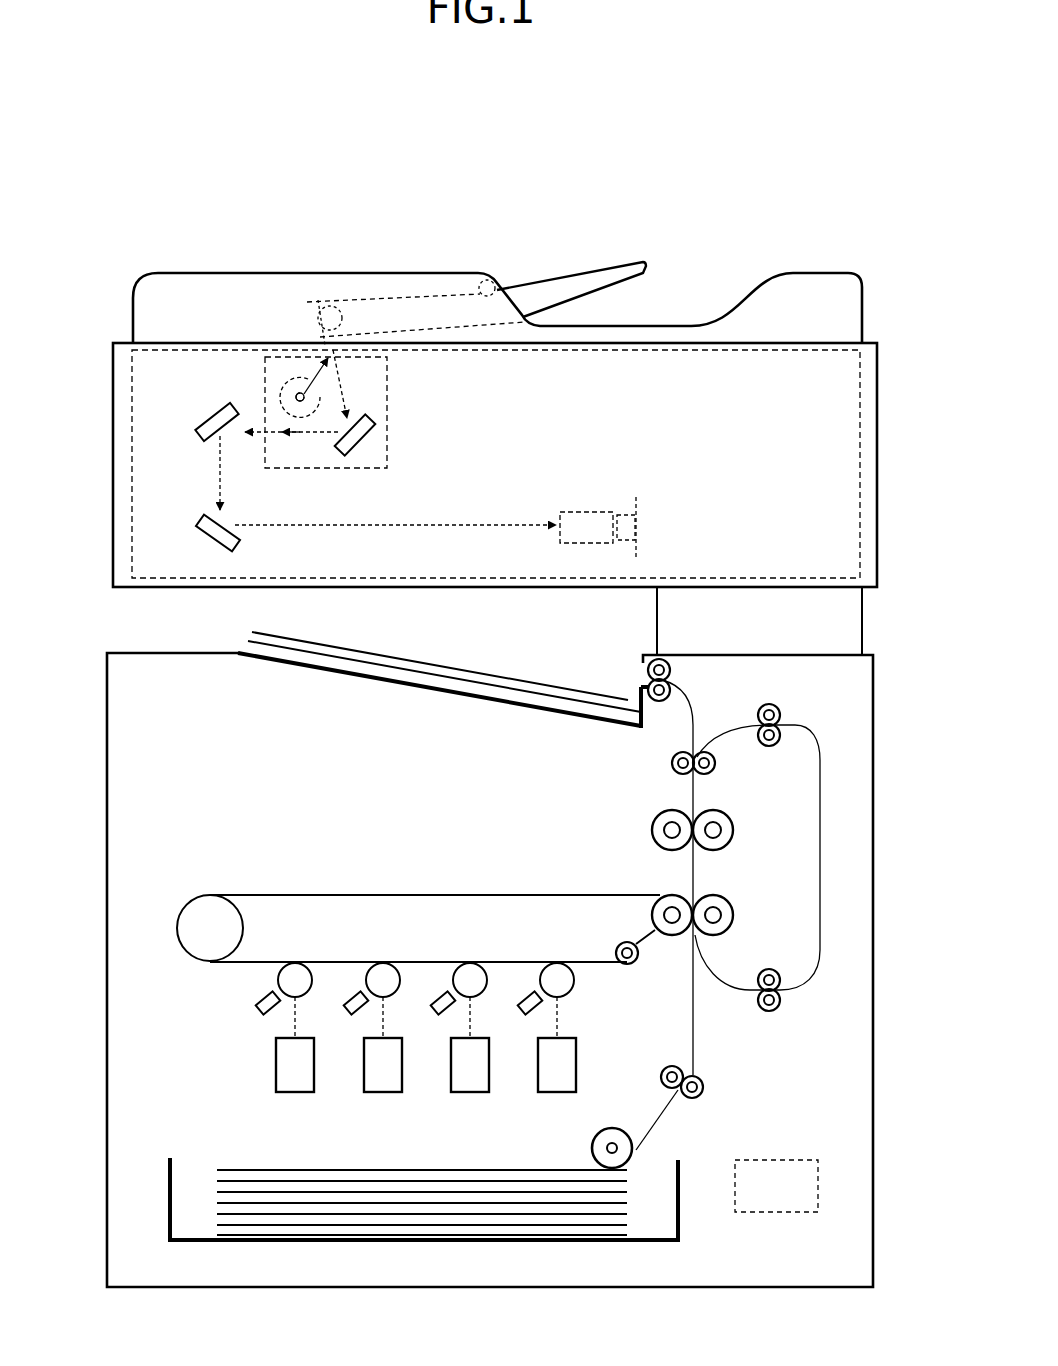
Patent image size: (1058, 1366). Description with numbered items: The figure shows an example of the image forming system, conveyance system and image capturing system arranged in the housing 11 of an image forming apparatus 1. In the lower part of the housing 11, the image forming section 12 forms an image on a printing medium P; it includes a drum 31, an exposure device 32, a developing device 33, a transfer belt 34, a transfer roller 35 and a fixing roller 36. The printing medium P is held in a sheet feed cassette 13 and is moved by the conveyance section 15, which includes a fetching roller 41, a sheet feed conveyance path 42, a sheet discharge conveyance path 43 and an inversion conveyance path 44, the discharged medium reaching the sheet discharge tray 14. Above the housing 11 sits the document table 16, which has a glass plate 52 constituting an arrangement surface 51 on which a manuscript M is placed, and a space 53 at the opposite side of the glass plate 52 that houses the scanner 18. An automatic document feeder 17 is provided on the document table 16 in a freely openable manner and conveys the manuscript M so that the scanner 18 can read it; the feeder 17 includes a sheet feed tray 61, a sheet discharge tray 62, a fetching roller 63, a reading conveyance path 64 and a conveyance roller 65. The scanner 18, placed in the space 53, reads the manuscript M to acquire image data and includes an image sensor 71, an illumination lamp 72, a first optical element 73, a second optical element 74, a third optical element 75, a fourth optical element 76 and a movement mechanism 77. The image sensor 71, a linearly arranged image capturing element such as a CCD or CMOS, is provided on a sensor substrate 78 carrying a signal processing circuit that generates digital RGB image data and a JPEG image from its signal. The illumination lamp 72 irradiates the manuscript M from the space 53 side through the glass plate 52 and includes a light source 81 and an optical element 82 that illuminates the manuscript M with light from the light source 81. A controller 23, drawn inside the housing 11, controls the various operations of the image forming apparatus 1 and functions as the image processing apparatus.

The image forming apparatus 1 is at (650, 203).
The housing 11 is at (107, 735).
The image forming section 12 is at (428, 885).
The sheet feed cassette 13 is at (170, 1200).
The sheet discharge tray 14 is at (330, 660).
The conveyance section 15 is at (640, 795).
The document table 16 is at (113, 378).
The automatic document feeder (ADF) 17 is at (400, 290).
The scanner 18 is at (493, 422).
The controller 23 is at (773, 1212).
The drum 31 is at (295, 963).
The exposure device 32 is at (293, 1094).
The developing device 33 is at (258, 1012).
The transfer belt 34 is at (548, 893).
The transfer roller 35 is at (725, 900).
The fixing roller 36 is at (725, 815).
The fetching roller 41 is at (620, 1128).
The sheet feed conveyance path 42 is at (690, 1028).
The sheet discharge conveyance path 43 is at (700, 712).
The inversion conveyance path 44 is at (820, 866).
The arrangement surface 51 is at (735, 350).
The glass plate 52 is at (692, 355).
The space 53 is at (850, 405).
The sheet feed tray 61 is at (565, 278).
The sheet discharge tray 62 is at (610, 325).
The fetching roller 63 is at (487, 280).
The reading conveyance path 64 is at (360, 300).
The conveyance roller 65 is at (318, 300).
The image sensor 71 is at (626, 513).
The illumination lamp 72 is at (275, 478).
The first optical element 73 is at (362, 468).
The second optical element 74 is at (203, 416).
The third optical element 75 is at (197, 542).
The fourth optical element 76 is at (572, 510).
The movement mechanism 77 is at (392, 385).
The sensor substrate 78 is at (640, 505).
The light source 81 is at (275, 372).
The optical element 82 is at (278, 392).
The manuscript M is at (520, 268).
The printing medium P is at (550, 690).